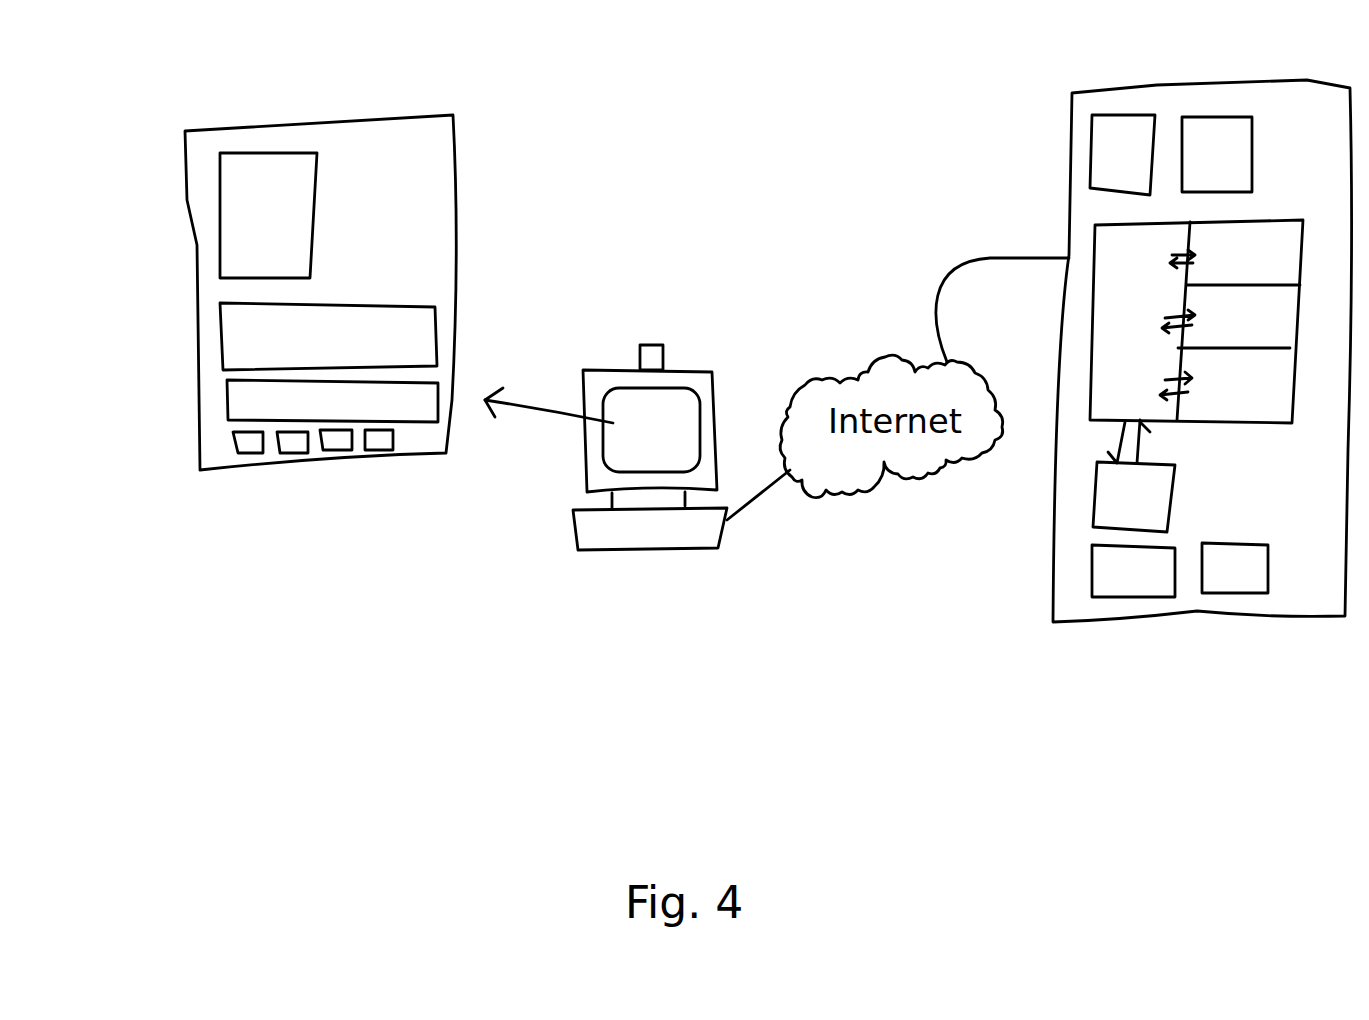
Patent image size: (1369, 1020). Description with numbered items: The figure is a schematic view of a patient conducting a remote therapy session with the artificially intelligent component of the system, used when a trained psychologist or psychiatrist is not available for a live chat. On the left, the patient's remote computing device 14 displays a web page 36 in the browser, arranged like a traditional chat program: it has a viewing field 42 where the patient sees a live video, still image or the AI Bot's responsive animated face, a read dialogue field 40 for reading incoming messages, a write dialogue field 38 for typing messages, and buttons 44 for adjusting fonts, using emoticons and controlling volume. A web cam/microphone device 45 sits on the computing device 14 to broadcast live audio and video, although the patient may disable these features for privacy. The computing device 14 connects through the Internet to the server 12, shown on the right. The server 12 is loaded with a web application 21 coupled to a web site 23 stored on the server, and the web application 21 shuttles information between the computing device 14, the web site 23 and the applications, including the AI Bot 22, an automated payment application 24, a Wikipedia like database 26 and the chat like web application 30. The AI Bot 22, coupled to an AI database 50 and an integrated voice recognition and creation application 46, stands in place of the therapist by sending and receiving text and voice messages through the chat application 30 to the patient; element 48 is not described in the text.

The server 12 is at (1083, 95).
The remote computing device 14 is at (577, 510).
The web application 21 is at (1122, 155).
The artificially intelligent application (AI Bot) 22 is at (1196, 321).
The web site 23 is at (1217, 154).
The automated payment application 24 is at (1133, 571).
The Wikipedia like database 26 is at (1235, 568).
The chat like web application 30 is at (1134, 476).
The web page 36 is at (318, 128).
The write dialogue field 38 is at (428, 387).
The read dialogue field 40 is at (423, 317).
The viewing field 42 is at (240, 163).
The buttons 44 is at (327, 447).
The web cam/microphone device 45 is at (657, 345).
The voice recognition and creation application 46 is at (1209, 262).
The database record 48 is at (1213, 319).
The AI database 50 is at (1204, 378).